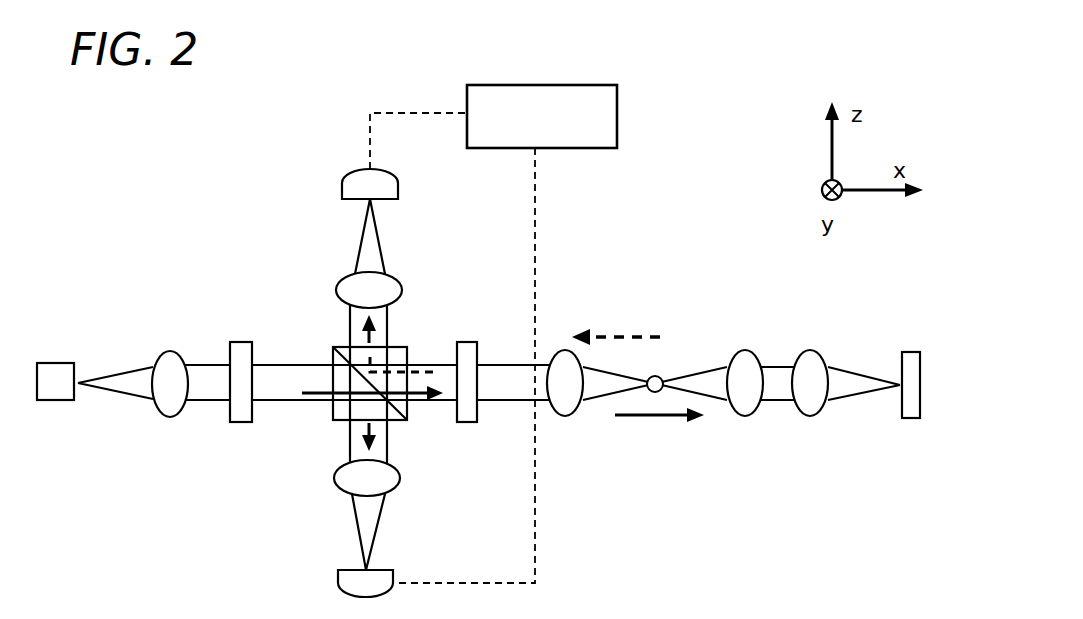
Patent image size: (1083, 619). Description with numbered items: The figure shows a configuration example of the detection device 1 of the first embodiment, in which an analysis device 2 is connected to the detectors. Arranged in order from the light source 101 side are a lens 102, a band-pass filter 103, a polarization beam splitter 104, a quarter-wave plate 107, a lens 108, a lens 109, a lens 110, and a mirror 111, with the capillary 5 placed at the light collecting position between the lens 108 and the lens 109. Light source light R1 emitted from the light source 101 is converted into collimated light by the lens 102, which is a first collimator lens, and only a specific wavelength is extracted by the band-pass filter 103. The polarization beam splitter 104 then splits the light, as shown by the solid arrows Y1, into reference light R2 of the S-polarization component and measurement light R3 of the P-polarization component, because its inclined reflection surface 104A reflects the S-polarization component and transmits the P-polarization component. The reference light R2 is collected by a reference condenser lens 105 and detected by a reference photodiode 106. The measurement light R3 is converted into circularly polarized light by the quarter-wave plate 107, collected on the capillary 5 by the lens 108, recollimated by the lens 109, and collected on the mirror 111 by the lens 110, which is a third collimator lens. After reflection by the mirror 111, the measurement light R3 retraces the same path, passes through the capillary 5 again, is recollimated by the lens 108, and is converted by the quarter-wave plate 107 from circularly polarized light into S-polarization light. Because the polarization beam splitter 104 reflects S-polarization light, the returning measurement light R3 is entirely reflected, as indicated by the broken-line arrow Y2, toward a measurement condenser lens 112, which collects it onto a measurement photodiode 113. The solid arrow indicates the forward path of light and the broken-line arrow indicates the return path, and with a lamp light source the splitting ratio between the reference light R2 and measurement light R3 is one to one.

The detection device 1 is at (708, 196).
The analysis device 2 is at (555, 85).
The capillary 5 is at (657, 376).
The light source 101 is at (40, 401).
The lens 102 is at (163, 351).
The band-pass filter 103 is at (240, 342).
The polarization beam splitter 104 is at (369, 360).
The reflection surface 104A is at (408, 346).
The reference condenser lens 105 is at (335, 482).
The reference photodiode 106 is at (395, 578).
The λ/4 plate 107 is at (467, 342).
The lens 108 is at (565, 350).
The lens 109 is at (745, 350).
The lens 110 is at (808, 351).
The mirror 111 is at (908, 351).
The measurement condenser lens 112 is at (345, 278).
The measurement photodiode 113 is at (398, 191).
The light source light R1 is at (293, 365).
The reference light R2 is at (388, 447).
The measurement light R3 is at (350, 325).
The solid arrows indicating splitting Y1 is at (387, 425).
The broken-line arrow indicating reflection Y2 is at (433, 372).